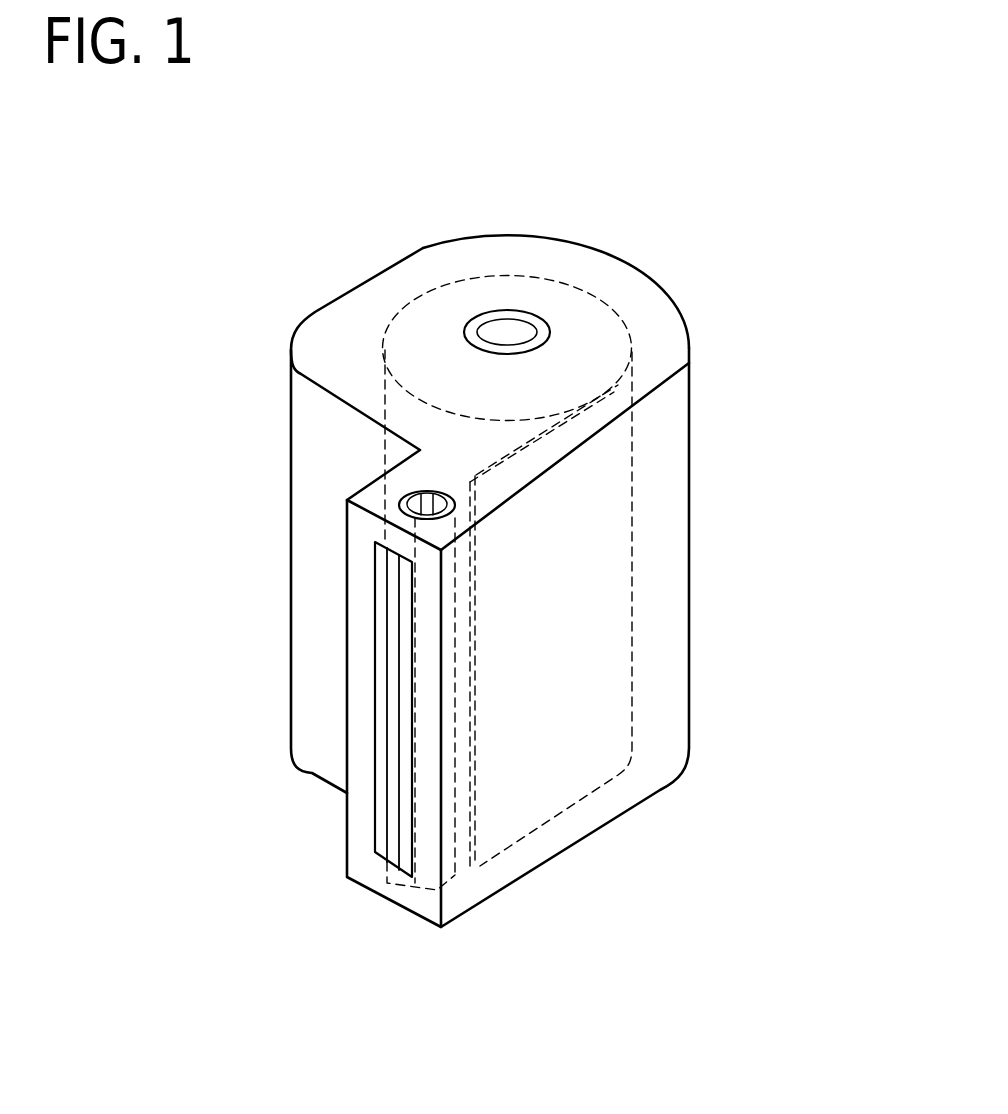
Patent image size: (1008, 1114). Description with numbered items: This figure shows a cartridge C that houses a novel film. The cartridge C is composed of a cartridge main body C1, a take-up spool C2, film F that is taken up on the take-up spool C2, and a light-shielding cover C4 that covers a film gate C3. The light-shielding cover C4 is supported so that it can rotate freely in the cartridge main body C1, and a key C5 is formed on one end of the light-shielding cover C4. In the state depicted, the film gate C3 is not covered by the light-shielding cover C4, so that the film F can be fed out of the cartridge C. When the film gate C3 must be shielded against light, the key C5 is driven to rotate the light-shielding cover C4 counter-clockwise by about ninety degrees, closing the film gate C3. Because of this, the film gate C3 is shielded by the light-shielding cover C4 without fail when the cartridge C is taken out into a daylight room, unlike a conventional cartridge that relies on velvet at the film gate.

The cartridge C is at (716, 598).
The cartridge main body C1 is at (662, 720).
The take-up spool C2 is at (538, 328).
The film gate C3 is at (380, 752).
The light-shielding cover C4 is at (395, 666).
The key C5 is at (398, 500).
The film F is at (585, 518).